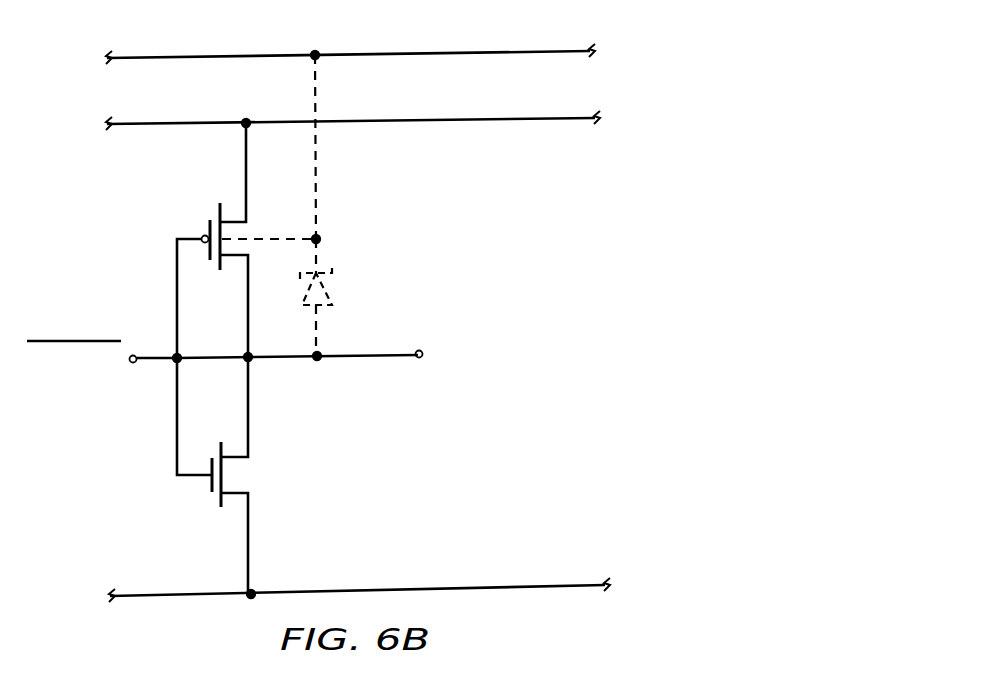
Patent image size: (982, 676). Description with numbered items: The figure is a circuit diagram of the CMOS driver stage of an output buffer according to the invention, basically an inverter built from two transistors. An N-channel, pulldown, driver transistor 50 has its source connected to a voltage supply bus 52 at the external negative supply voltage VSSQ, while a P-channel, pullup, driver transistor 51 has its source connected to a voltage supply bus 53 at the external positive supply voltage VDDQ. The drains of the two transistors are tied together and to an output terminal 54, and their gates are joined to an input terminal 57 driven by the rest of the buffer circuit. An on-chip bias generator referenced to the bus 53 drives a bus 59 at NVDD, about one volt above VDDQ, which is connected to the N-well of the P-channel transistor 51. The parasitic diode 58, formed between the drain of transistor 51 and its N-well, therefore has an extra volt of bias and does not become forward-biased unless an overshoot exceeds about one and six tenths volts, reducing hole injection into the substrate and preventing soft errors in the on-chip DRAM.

The bus 59 is at (358, 53).
The voltage supply bus 53 is at (362, 120).
The P-channel pullup driver transistor 51 is at (247, 222).
The parasitic diode 58 is at (330, 273).
The input terminal 57 is at (136, 355).
The output terminal 54 is at (418, 349).
The N-channel pulldown driver transistor 50 is at (229, 488).
The voltage supply bus 52 is at (297, 593).